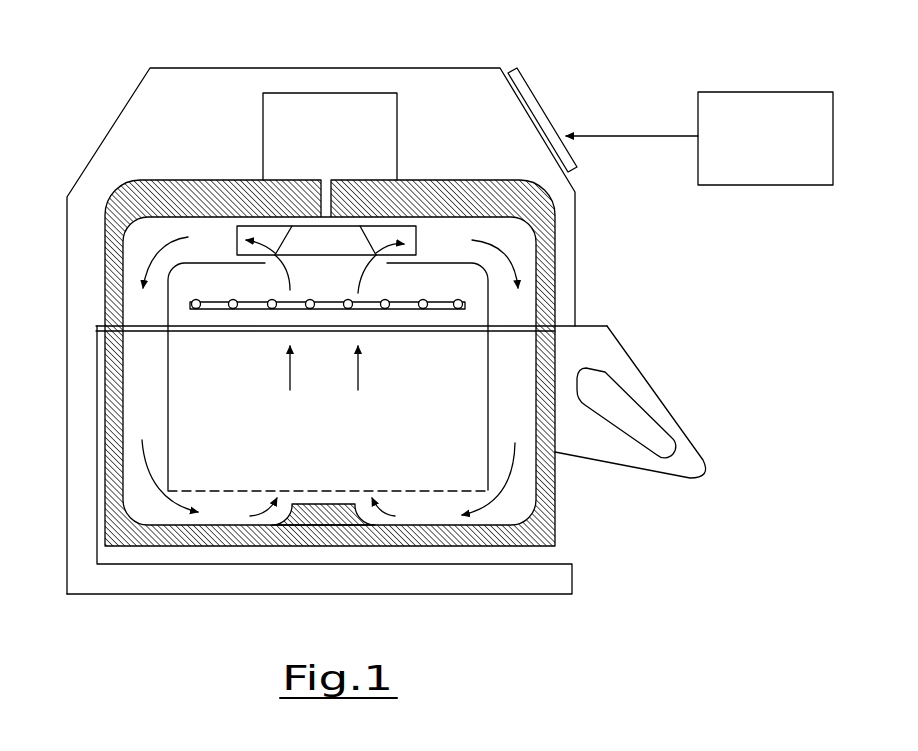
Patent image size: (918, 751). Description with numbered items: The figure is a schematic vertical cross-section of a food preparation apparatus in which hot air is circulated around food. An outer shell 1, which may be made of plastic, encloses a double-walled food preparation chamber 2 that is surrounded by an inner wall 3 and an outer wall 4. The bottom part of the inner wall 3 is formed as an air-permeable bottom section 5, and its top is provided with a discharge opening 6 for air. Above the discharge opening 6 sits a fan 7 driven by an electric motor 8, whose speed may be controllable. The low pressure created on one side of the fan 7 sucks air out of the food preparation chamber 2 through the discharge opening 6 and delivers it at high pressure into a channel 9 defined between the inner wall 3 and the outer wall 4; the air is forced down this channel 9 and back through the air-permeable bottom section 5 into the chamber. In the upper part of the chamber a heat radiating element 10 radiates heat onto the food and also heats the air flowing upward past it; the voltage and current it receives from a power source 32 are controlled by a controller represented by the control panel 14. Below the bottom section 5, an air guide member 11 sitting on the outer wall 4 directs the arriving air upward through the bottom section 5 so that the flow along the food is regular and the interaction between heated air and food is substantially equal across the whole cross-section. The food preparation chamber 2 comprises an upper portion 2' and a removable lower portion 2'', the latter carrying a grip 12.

The outer shell 1 is at (67, 234).
The food preparation chamber 2 is at (193, 378).
The upper portion 2' is at (353, 269).
The lower portion 2'' is at (539, 491).
The inner wall 3 is at (168, 453).
The outer wall 4 is at (115, 503).
The air-permeable bottom section 5 is at (429, 494).
The discharge opening 6 is at (322, 272).
The fan 7 is at (310, 242).
The electric motor 8 is at (277, 110).
The channel 9 is at (143, 305).
The heat radiating element 10 is at (211, 300).
The air guide member 11 is at (323, 520).
The grip 12 is at (640, 390).
The control panel 14 is at (548, 128).
The power source 32 is at (765, 138).